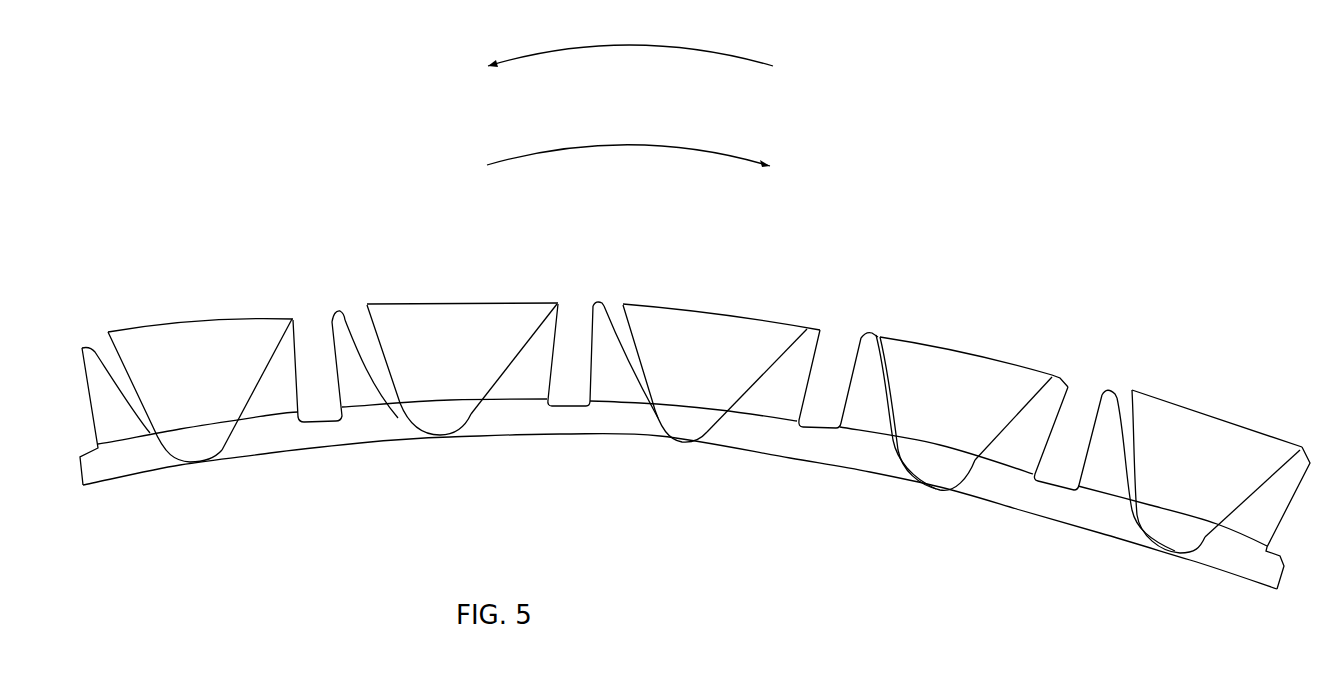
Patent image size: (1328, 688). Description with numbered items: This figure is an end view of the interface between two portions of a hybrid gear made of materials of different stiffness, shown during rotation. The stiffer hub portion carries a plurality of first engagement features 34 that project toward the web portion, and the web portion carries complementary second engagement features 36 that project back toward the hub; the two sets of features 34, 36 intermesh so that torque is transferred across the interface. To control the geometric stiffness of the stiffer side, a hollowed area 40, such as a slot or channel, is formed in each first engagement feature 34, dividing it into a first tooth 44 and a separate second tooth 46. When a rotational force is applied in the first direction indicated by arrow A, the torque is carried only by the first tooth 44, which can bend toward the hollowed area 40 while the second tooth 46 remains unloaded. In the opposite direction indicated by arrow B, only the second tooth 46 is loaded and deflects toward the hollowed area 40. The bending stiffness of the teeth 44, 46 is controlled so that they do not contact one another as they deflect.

The first engagement feature 34 is at (373, 272).
The second engagement feature 36 is at (457, 362).
The hollowed area 40 is at (316, 357).
The first tooth 44 is at (283, 357).
The second tooth 46 is at (352, 357).
The arrow A is at (630, 41).
The arrow B is at (628, 141).